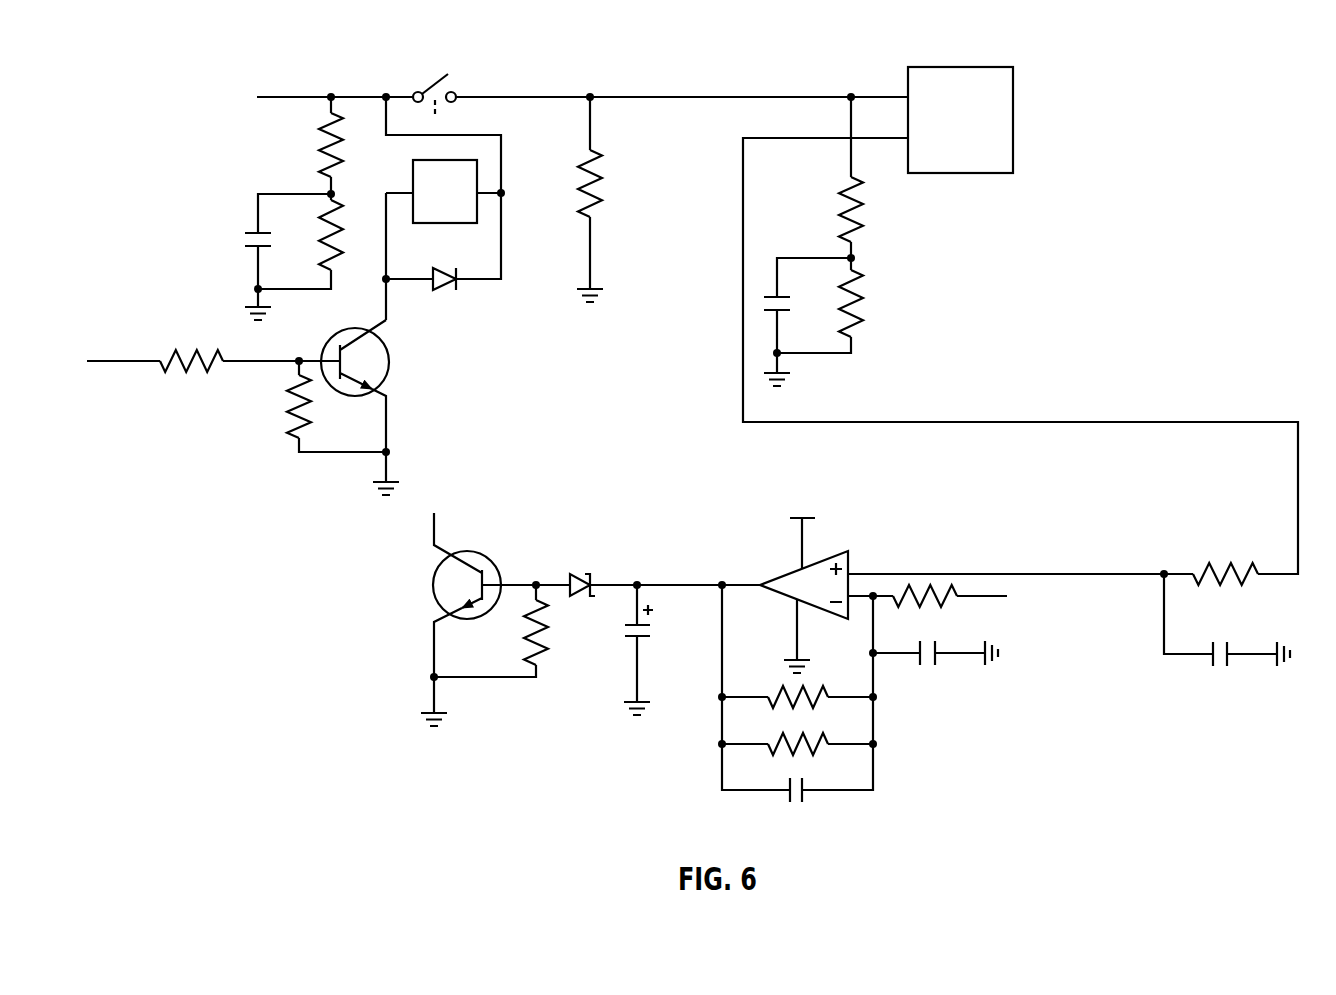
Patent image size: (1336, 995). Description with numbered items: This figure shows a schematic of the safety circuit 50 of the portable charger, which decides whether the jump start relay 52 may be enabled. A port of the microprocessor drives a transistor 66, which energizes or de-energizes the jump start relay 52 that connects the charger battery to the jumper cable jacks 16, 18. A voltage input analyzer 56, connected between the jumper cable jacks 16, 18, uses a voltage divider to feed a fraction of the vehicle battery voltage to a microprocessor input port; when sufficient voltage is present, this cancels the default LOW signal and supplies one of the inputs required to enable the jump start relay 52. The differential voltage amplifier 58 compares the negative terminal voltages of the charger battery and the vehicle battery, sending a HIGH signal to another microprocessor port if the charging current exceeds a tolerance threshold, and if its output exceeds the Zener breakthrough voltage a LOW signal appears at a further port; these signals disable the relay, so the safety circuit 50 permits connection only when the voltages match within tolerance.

The safety circuit 50 is at (1214, 73).
The jump start relay 52 is at (493, 243).
The voltage input analyzer 56 is at (904, 230).
The differential voltage amplifier 58 is at (585, 568).
The transistor 66 is at (383, 378).
The positive jumper cable jack 16 is at (1020, 120).
The negative jumper cable jack 18 is at (1020, 130).